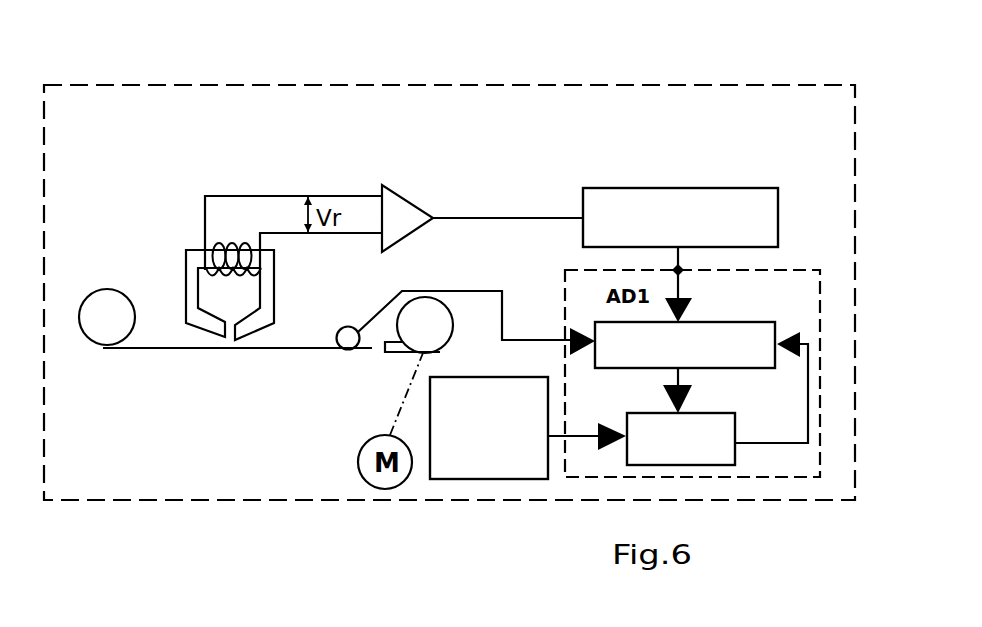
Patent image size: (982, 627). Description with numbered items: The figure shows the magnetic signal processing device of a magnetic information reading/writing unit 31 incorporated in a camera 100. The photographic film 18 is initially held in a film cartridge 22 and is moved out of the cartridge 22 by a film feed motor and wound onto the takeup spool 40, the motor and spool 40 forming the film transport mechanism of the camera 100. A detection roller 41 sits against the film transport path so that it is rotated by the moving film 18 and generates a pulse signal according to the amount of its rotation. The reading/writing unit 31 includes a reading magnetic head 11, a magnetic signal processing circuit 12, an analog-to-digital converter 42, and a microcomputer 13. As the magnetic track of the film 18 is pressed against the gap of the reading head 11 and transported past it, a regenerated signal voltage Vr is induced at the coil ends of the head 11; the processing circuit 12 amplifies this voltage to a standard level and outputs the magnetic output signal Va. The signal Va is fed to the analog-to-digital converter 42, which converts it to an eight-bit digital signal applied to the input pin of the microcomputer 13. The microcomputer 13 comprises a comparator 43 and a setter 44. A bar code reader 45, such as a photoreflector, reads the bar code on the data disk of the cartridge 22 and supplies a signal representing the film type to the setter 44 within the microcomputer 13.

The camera 100 is at (438, 500).
The photographic film 18 is at (180, 350).
The takeup spool 40 is at (110, 296).
The reading magnetic head 11 is at (276, 298).
The magnetic signal processing circuit 12 is at (393, 230).
The magnetic information reading/writing unit 31 is at (575, 164).
The analog-to-digital converter 42 is at (738, 188).
The microcomputer 13 is at (793, 270).
The comparator 43 is at (762, 322).
The setter 44 is at (648, 414).
The detection roller 41 is at (357, 328).
The film cartridge 22 is at (448, 343).
The bar code reader 45 is at (497, 480).